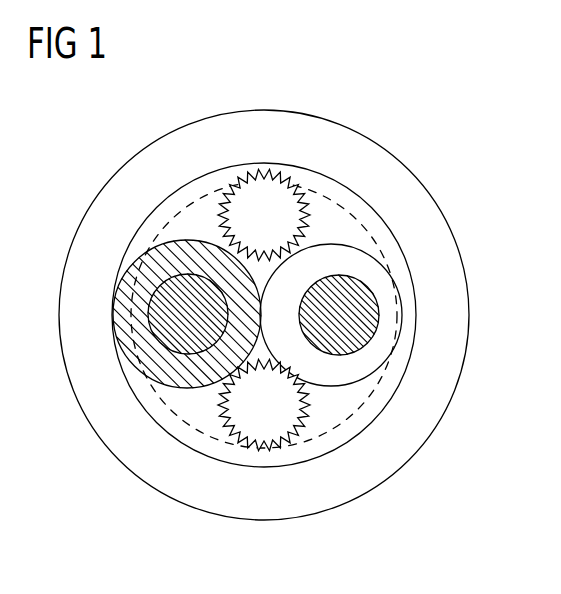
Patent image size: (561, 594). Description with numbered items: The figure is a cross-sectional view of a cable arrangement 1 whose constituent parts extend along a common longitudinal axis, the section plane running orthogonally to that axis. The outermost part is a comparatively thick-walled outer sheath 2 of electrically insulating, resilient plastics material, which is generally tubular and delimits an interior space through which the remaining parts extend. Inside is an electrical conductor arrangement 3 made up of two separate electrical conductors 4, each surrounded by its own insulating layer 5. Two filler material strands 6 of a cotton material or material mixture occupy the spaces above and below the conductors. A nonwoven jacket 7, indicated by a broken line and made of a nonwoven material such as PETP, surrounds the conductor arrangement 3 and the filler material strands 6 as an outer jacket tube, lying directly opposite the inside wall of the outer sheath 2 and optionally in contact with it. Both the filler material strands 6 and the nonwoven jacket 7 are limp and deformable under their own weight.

The cable arrangement 1 is at (458, 130).
The outer sheath 2 is at (106, 434).
The electrical conductor arrangement 3 is at (200, 228).
The electrical conductor 4 is at (150, 316).
The insulating layer 5 is at (122, 290).
The filler material strand 6 is at (268, 210).
The nonwoven jacket 7 is at (393, 396).